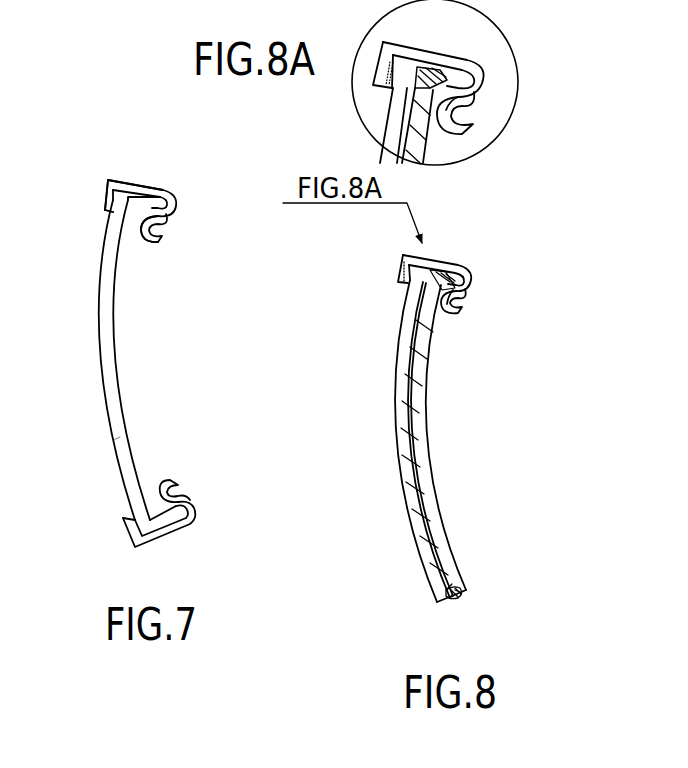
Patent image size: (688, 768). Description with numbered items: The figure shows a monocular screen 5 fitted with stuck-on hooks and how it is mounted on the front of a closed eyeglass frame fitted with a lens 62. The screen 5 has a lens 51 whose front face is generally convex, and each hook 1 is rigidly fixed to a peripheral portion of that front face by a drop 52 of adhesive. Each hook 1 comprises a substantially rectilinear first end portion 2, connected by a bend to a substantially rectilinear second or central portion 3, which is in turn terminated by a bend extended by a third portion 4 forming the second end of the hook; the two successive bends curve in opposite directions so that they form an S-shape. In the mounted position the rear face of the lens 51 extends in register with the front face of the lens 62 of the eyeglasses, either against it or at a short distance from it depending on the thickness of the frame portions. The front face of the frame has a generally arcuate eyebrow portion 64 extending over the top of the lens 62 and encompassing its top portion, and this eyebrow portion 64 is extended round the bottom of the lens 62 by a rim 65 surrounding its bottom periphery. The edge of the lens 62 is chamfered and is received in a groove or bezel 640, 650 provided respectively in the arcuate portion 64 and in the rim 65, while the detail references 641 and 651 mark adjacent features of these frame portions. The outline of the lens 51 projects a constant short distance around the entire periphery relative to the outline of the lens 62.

In FIG. 7, the hook 1 is at (186, 190).
In FIG. 8, the hook 1 is at (397, 258).
In FIG. 8A, the hook 1 is at (372, 46).
In FIG. 7, the first end portion 2 is at (106, 200).
In FIG. 7, the second portion 3 is at (140, 178).
In FIG. 7, the third portion 4 is at (160, 240).
In FIG. 7, the screen 5 is at (96, 355).
In FIG. 8, the screen 5 is at (390, 396).
In FIG. 8A, the screen 5 is at (393, 125).
In FIG. 7, the lens 51 is at (118, 436).
In FIG. 8, the lens 51 is at (414, 508).
In FIG. 7, the drop of adhesive 52 is at (110, 220).
In FIG. 8, the lens 62 is at (428, 430).
In FIG. 8A, the lens 62 is at (417, 125).
In FIG. 8, the eyebrow portion 64 is at (436, 272).
In FIG. 8A, the eyebrow portion 64 is at (417, 87).
In FIG. 8, the rim 65 is at (457, 598).
In FIG. 8, the groove 640 is at (455, 303).
In FIG. 8A, the groove 640 is at (388, 113).
In FIG. 8, the hatched bead 641 is at (456, 292).
In FIG. 8A, the hatched bead 641 is at (460, 113).
In FIG. 8, the groove 650 is at (463, 584).
In FIG. 8, the lower lip 651 is at (463, 590).